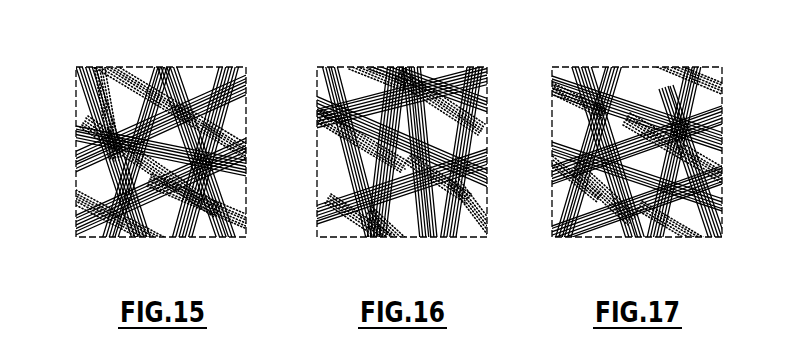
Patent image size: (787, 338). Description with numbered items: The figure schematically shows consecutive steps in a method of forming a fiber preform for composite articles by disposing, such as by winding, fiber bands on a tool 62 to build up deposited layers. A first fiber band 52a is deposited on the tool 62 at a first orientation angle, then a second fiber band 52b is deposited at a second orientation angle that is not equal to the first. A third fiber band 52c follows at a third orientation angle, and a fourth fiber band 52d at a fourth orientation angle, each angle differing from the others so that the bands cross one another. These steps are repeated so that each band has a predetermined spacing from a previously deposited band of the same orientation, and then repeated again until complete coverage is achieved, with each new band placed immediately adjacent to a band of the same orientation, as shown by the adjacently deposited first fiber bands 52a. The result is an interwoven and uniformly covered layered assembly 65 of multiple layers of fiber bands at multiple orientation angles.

In FIG. 15, the first fiber band 52a is at (63, 95).
In FIG. 17, the first fiber band 52a is at (700, 76).
In FIG. 15, the second fiber band 52b is at (92, 160).
In FIG. 16, the second fiber band 52b is at (360, 120).
In FIG. 17, the second fiber band 52b is at (582, 76).
In FIG. 15, the third fiber band 52c is at (93, 76).
In FIG. 16, the third fiber band 52c is at (453, 237).
In FIG. 17, the third fiber band 52c is at (683, 107).
In FIG. 15, the fourth fiber band 52d is at (228, 76).
In FIG. 16, the fourth fiber band 52d is at (330, 100).
In FIG. 17, the fourth fiber band 52d is at (590, 103).
In FIG. 15, the tool 62 is at (90, 188).
In FIG. 16, the tool 62 is at (403, 226).
In FIG. 17, the layered assembly 65 is at (722, 193).